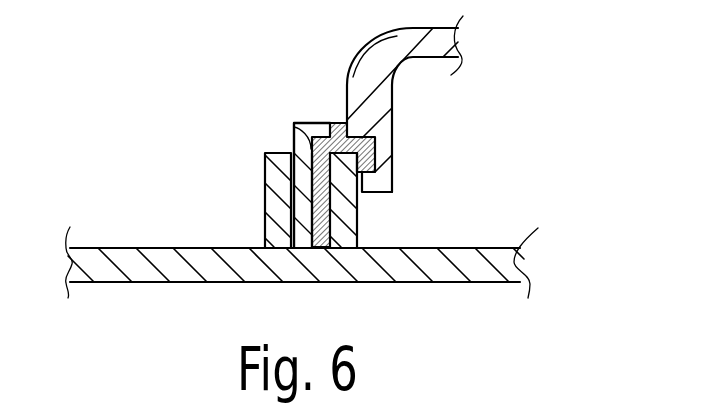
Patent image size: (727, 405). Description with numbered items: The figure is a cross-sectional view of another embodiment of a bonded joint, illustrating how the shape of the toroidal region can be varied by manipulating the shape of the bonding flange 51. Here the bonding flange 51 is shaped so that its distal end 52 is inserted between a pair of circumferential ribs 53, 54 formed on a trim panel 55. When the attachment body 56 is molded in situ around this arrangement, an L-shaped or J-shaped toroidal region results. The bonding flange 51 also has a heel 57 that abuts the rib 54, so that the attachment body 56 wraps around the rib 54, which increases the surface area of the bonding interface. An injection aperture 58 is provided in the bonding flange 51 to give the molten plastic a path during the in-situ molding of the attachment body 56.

The bonding flange 51 is at (270, 188).
The distal end 52 is at (298, 250).
The circumferential rib 53 is at (263, 178).
The circumferential rib 54 is at (360, 223).
The trim panel 55 is at (113, 247).
The attachment body 56 is at (302, 122).
The heel 57 is at (380, 183).
The injection aperture 58 is at (335, 122).